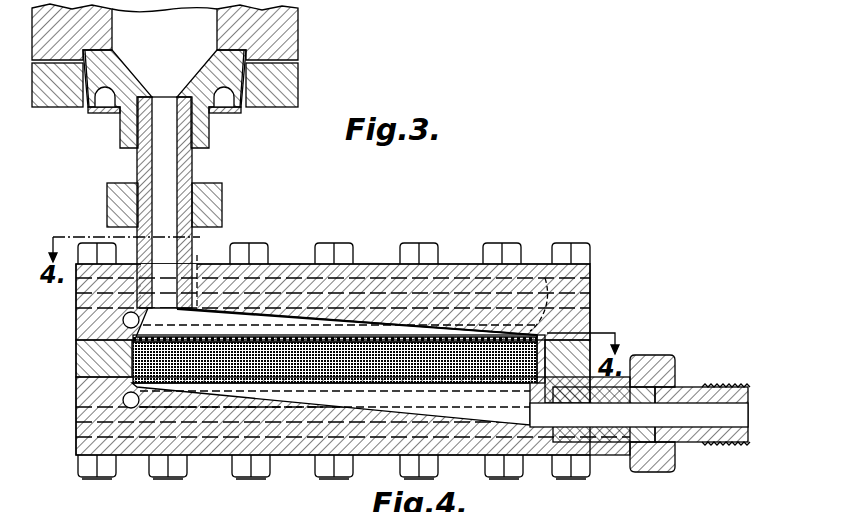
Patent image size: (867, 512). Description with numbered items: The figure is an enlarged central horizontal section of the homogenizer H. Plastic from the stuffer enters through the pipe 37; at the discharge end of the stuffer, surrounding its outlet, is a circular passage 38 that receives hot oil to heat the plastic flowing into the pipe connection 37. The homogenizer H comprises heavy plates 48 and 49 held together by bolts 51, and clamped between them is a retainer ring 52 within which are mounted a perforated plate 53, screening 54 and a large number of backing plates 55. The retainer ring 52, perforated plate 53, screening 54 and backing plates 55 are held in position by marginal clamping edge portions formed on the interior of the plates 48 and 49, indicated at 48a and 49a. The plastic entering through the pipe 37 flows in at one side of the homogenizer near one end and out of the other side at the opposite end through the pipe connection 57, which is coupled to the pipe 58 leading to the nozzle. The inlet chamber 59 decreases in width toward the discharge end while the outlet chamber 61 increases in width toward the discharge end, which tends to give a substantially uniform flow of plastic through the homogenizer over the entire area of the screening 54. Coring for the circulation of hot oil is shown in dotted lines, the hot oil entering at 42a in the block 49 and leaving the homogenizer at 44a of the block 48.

The pipe 37 is at (192, 162).
The circular passage 38 is at (103, 115).
The hot oil outlet 44a is at (88, 287).
The plate 48 is at (90, 317).
The marginal clamping edge portion 48a is at (122, 326).
The plate 49 is at (90, 405).
The marginal clamping edge portion 49a is at (128, 404).
The hot oil inlet 42a is at (87, 422).
The retainer ring 52 is at (90, 358).
The perforated plate 53 is at (347, 337).
The backing plates 55 is at (247, 383).
The bolts 51 is at (258, 243).
The inlet chamber 59 is at (262, 323).
The outlet chamber 61 is at (485, 412).
The screening 54 is at (550, 332).
The pipe connection 57 is at (607, 444).
The pipe 58 is at (693, 442).
The homogenizer H is at (455, 258).